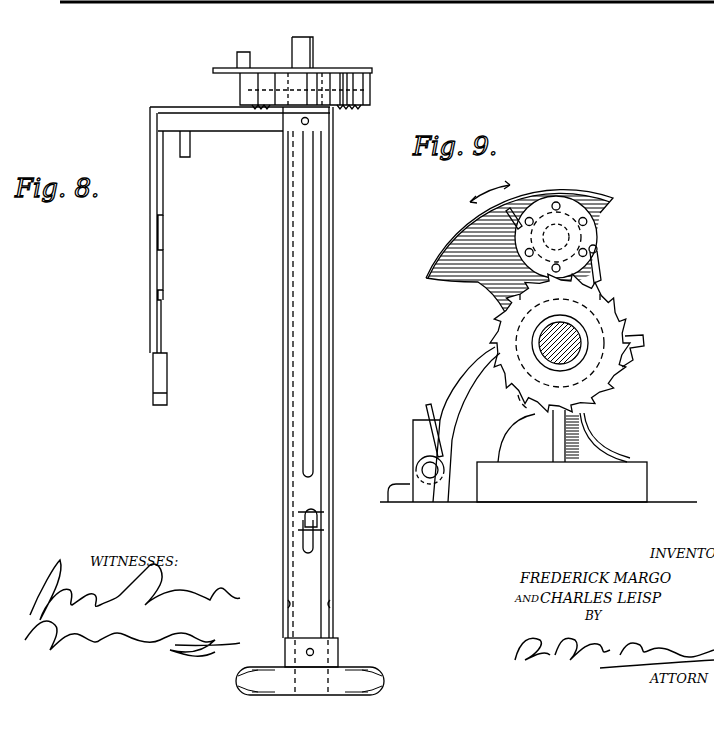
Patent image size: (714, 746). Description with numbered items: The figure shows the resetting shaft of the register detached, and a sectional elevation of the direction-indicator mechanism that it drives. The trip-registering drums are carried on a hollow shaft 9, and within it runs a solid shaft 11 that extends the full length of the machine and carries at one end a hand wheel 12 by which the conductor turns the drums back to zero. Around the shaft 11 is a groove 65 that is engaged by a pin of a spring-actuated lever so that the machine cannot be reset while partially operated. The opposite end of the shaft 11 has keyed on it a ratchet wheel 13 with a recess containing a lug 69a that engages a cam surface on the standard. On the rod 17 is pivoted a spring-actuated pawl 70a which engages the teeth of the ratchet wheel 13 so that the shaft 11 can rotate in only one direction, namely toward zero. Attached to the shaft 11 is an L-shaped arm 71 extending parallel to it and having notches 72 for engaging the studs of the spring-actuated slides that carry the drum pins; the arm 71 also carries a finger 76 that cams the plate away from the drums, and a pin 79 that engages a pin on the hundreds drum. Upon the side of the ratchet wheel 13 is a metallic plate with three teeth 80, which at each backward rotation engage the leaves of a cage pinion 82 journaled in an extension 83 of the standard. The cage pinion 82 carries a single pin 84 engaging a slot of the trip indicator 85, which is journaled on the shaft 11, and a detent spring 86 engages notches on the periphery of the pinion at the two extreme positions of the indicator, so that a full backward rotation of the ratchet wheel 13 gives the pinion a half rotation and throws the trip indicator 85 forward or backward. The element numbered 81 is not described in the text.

In FIG. 8, the hollow shaft 9 is at (333, 390).
In FIG. 8, the solid shaft 11 is at (314, 68).
In FIG. 9, the solid shaft 11 is at (547, 363).
In FIG. 8, the hand wheel 12 is at (356, 664).
In FIG. 8, the ratchet wheel 13 is at (372, 82).
In FIG. 9, the ratchet wheel 13 is at (493, 342).
In FIG. 9, the rod 17 is at (422, 465).
In FIG. 8, the groove 65 is at (305, 515).
In FIG. 8, the lug 69a is at (280, 63).
In FIG. 9, the spring-actuated pawl 70a is at (448, 395).
In FIG. 8, the L-shaped arm 71 is at (172, 123).
In FIG. 8, the notches 72 is at (160, 303).
In FIG. 8, the finger 76 is at (228, 110).
In FIG. 8, the pin 79 is at (188, 143).
In FIG. 8, the teeth 80 is at (222, 72).
In FIG. 9, the teeth 80 is at (638, 361).
In FIG. 8, the plate 81 is at (331, 70).
In FIG. 9, the cage pinion 82 is at (563, 205).
In FIG. 9, the extension 83 is at (543, 255).
In FIG. 9, the pin 84 is at (524, 253).
In FIG. 9, the trip indicator 85 is at (430, 267).
In FIG. 9, the detent spring 86 is at (603, 265).